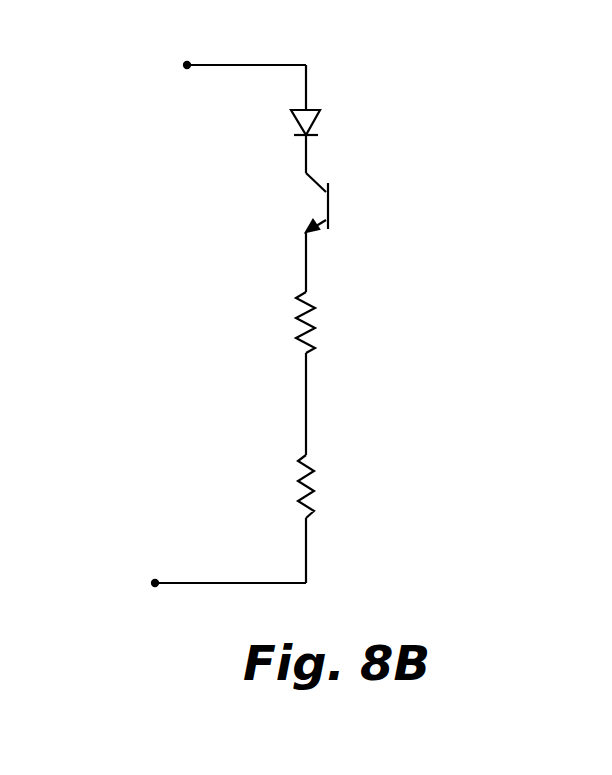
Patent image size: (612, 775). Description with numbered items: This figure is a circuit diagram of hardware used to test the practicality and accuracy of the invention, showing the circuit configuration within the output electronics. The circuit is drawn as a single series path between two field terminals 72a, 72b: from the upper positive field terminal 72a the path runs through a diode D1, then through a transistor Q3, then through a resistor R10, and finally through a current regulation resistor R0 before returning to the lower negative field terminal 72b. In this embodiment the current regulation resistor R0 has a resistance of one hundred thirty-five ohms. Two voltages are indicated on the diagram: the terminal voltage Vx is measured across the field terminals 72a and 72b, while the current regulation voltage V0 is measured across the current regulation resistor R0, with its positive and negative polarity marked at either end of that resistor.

The field terminal 72a is at (186, 63).
The field terminal 72b is at (155, 581).
The diode D1 is at (334, 114).
The transistor Q3 is at (341, 202).
The terminal voltage Vx is at (218, 253).
The resistor R10 is at (336, 322).
The current regulation resistor R0 is at (371, 486).
The current regulation voltage V0 is at (276, 489).